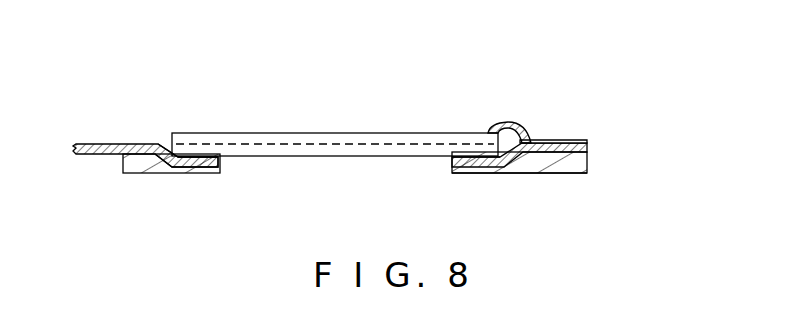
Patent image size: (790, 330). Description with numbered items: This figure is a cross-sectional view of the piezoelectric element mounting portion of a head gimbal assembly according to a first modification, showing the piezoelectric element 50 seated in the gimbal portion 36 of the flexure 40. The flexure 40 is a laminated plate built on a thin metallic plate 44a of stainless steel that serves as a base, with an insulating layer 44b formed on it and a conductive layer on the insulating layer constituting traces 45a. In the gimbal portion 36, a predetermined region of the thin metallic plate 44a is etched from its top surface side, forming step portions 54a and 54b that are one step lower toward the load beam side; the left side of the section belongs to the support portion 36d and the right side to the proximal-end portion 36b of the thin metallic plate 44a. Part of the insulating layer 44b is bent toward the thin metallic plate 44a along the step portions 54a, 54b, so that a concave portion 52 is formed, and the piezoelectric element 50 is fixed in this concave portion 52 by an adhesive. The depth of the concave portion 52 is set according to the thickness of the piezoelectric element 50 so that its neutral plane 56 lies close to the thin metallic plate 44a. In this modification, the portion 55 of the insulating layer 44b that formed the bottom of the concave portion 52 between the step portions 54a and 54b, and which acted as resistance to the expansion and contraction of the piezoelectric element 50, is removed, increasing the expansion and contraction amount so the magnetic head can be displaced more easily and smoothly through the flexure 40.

The gimbal portion 36 is at (143, 131).
The proximal-end portion 36b is at (513, 173).
The support portion 36d is at (140, 173).
The flexure 40 is at (572, 131).
The thin metallic plate 44a is at (580, 165).
The insulating layer 44b is at (92, 143).
The trace 45a is at (587, 140).
The piezoelectric element 50 is at (368, 133).
The concave portion 52 is at (200, 140).
The step portion 54a is at (203, 174).
The step portion 54b is at (474, 173).
The portion of the insulating layer 55 is at (440, 179).
The neutral plane 56 is at (305, 143).